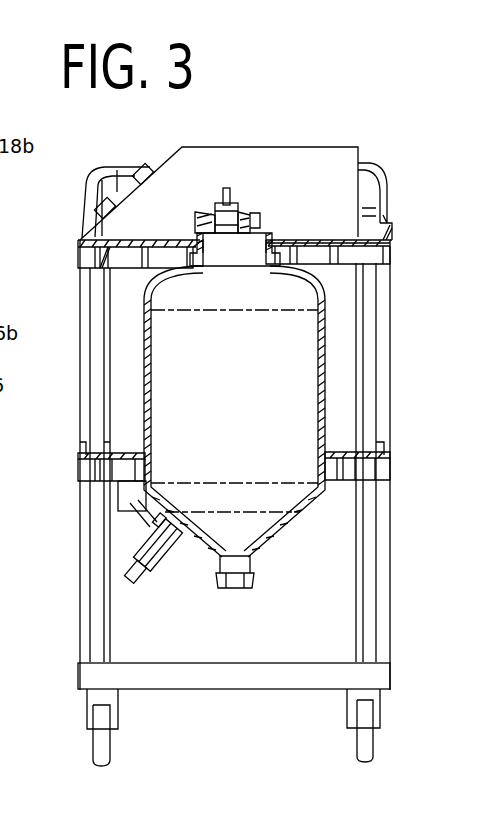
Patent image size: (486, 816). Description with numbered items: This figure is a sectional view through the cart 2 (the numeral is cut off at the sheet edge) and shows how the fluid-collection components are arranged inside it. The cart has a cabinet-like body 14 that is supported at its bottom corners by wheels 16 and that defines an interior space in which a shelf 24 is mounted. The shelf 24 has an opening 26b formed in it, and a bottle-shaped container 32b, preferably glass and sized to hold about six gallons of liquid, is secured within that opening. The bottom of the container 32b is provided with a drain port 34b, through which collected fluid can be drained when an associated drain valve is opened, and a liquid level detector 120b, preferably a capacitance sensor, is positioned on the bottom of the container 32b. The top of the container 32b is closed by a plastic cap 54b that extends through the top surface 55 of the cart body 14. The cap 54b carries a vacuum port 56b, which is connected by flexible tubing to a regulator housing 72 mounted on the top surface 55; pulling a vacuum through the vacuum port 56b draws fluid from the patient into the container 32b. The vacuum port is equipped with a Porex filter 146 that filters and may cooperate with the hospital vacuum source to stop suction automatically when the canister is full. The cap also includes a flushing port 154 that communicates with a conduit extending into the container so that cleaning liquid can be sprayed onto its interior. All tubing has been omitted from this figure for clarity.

The dispensing system 2 is at (49, 235).
The cart body 14 is at (391, 424).
The wheels 16 is at (110, 767).
The shelf 24 is at (372, 467).
The opening 26b is at (326, 453).
The container 32b is at (244, 368).
The drain port 34b is at (227, 586).
The cap 54b is at (268, 228).
The top surface 55 is at (330, 238).
The vacuum port 56b is at (245, 187).
The regulator housing 72 is at (206, 147).
The liquid level detector 120b is at (128, 553).
The Porex filter 146 is at (203, 240).
The flushing port 154 is at (257, 213).